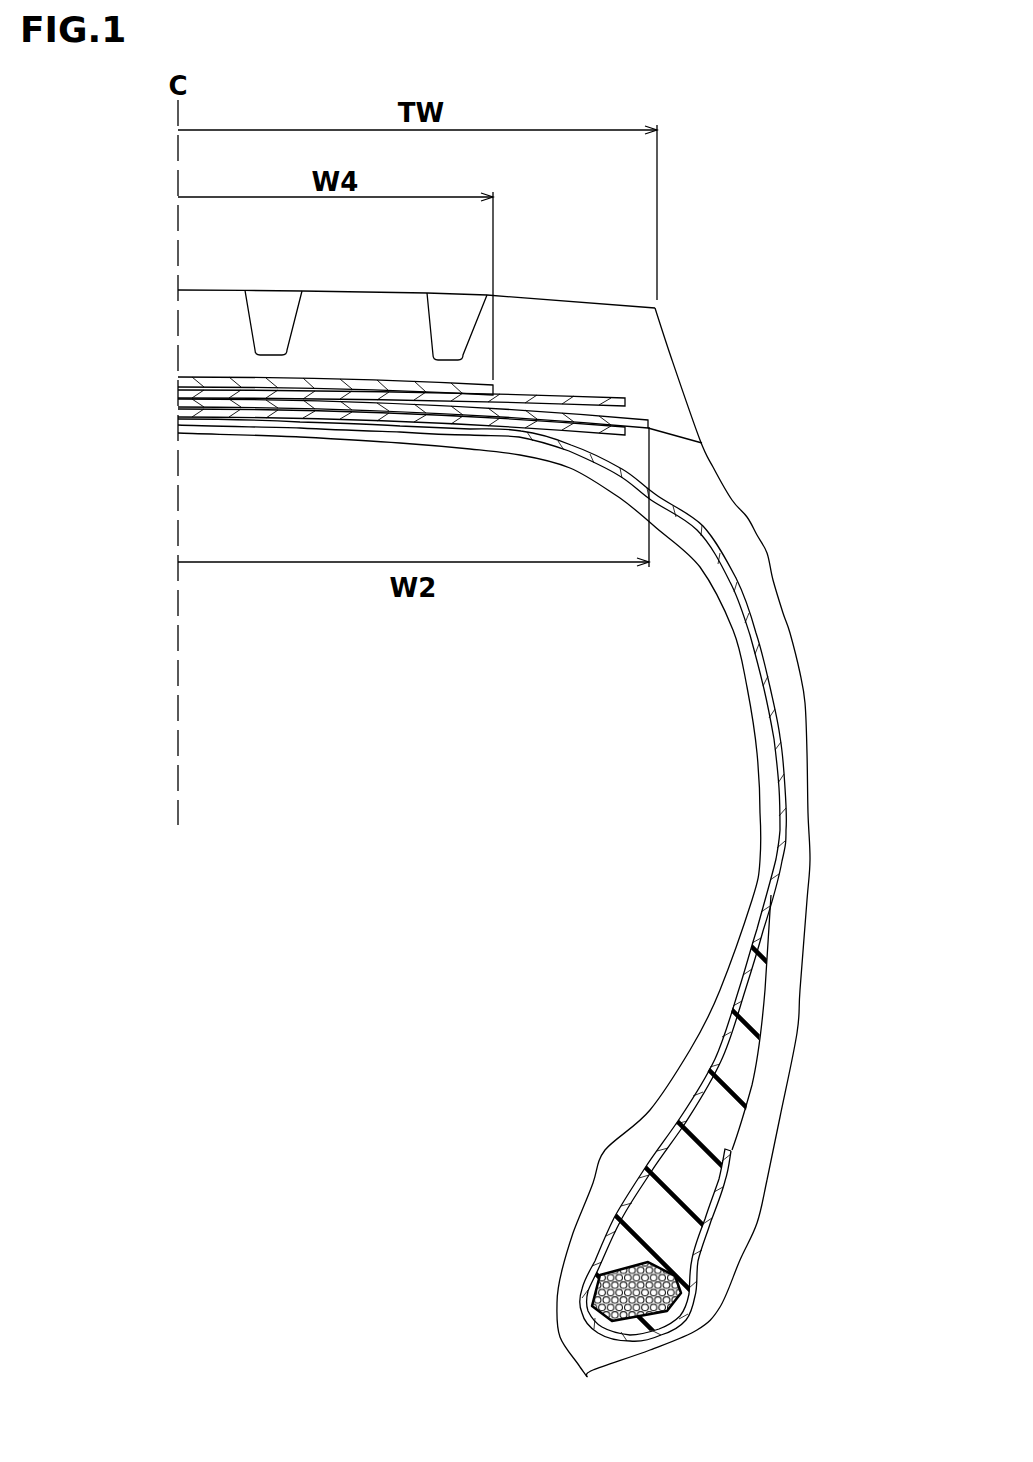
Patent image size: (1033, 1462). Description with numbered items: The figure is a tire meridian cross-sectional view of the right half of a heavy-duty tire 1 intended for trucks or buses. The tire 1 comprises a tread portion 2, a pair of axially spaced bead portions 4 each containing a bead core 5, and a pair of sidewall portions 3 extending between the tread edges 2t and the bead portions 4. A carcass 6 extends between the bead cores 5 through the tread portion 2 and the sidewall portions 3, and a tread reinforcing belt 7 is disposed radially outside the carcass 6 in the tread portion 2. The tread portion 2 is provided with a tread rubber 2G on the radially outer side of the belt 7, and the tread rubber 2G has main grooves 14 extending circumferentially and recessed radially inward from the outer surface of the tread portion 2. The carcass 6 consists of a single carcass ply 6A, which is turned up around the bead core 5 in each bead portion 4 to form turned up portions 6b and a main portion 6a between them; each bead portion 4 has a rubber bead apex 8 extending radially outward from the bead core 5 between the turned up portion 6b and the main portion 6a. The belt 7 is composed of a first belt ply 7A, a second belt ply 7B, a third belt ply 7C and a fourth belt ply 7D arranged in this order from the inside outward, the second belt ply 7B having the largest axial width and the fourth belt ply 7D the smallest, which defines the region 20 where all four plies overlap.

The heavy-duty tire 1 is at (768, 215).
The tread portion 2 is at (673, 243).
The tread edge 2t is at (657, 308).
The tread rubber 2G is at (555, 338).
The sidewall portion 3 is at (805, 653).
The bead portion 4 is at (782, 1240).
The bead core 5 is at (628, 1287).
The carcass 6 is at (773, 778).
The carcass ply 6A is at (478, 978).
The main portion 6a is at (740, 997).
The turned up portion 6b is at (712, 1192).
The tread reinforcing belt 7 is at (82, 320).
The first belt ply 7A is at (178, 408).
The second belt ply 7B is at (178, 398).
The third belt ply 7C is at (178, 390).
The fourth belt ply 7D is at (178, 382).
The rubber bead apex 8 is at (648, 1222).
The main groove 14 is at (272, 310).
The region 20 is at (358, 377).